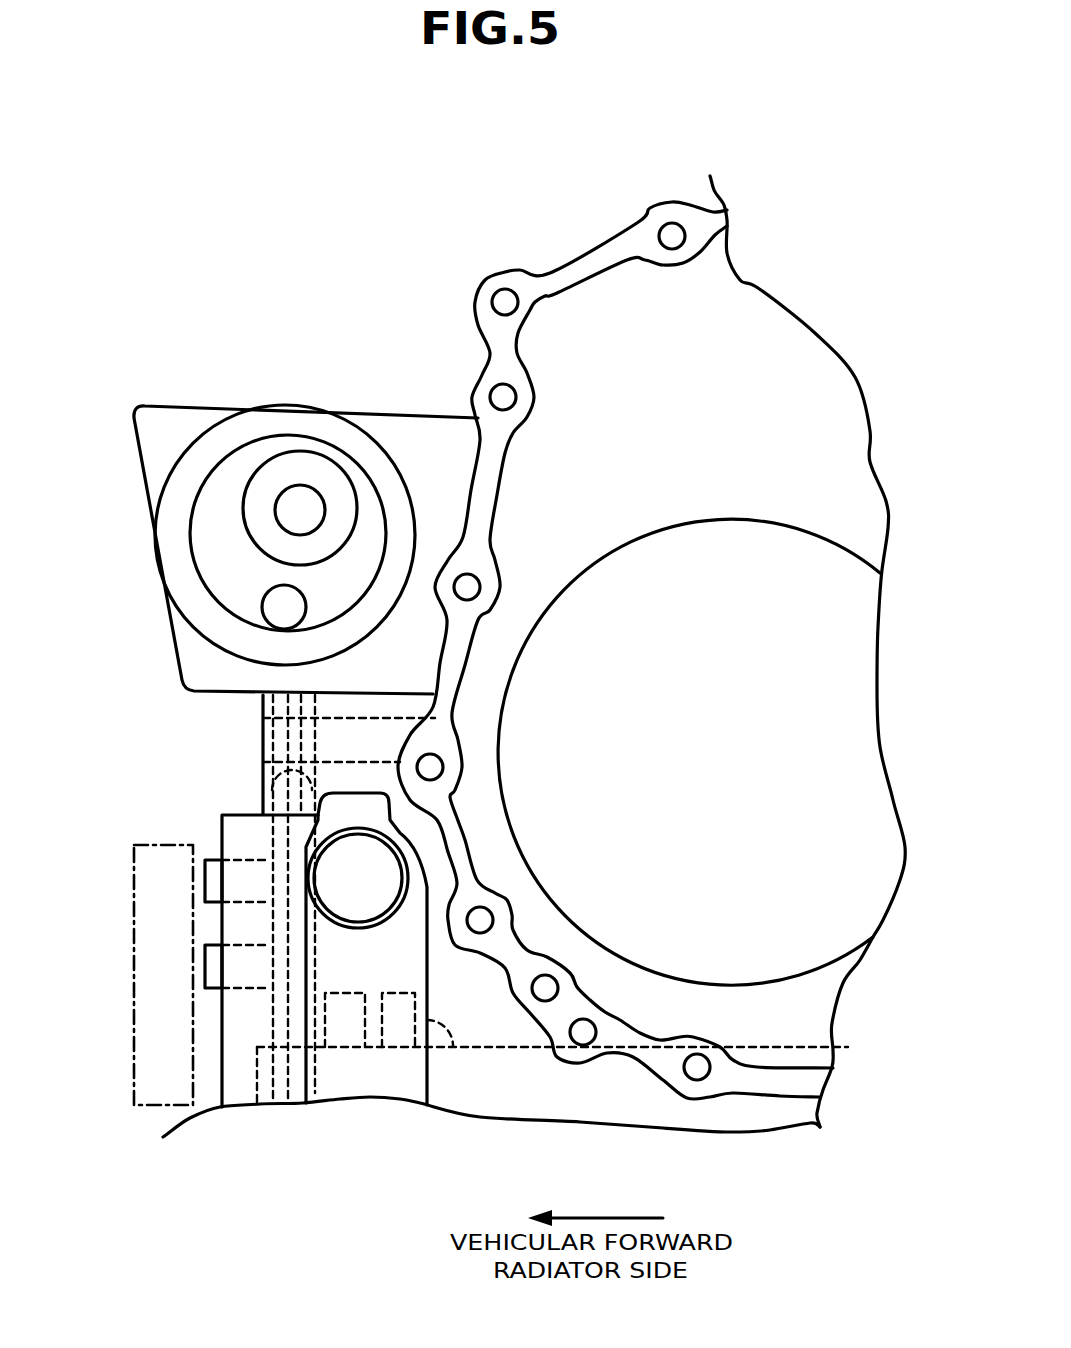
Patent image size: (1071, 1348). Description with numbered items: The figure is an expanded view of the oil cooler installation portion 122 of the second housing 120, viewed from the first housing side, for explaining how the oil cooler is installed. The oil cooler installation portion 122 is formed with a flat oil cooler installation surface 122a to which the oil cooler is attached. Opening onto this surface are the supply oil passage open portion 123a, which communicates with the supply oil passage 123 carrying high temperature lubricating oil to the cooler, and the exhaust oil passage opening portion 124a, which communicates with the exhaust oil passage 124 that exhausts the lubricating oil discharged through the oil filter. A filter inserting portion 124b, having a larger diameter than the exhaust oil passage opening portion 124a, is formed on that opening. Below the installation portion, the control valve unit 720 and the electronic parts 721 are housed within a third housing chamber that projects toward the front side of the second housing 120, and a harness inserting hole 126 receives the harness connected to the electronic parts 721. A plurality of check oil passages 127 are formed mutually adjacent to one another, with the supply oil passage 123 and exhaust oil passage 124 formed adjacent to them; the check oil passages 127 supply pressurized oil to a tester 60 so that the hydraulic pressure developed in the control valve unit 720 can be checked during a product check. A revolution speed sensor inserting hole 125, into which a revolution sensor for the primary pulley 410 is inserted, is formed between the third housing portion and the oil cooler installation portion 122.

The second housing 120 is at (487, 258).
The oil cooler installation portion 122 is at (407, 437).
The oil cooler installation surface 122a is at (208, 629).
The supply oil passage 123 is at (280, 807).
The supply oil passage open portion 123a is at (273, 600).
The exhaust oil passage 124 is at (265, 777).
The exhaust oil passage opening portion 124a is at (283, 495).
The filter inserting portion 124b is at (325, 470).
The revolution speed sensor inserting hole 125 is at (262, 747).
The harness inserting hole 126 is at (347, 924).
The check oil passages 127 is at (205, 891).
The primary pulley 410 is at (697, 520).
The tester 60 is at (147, 1090).
The control valve unit 720 is at (392, 1077).
The electronic parts 721 is at (450, 1050).